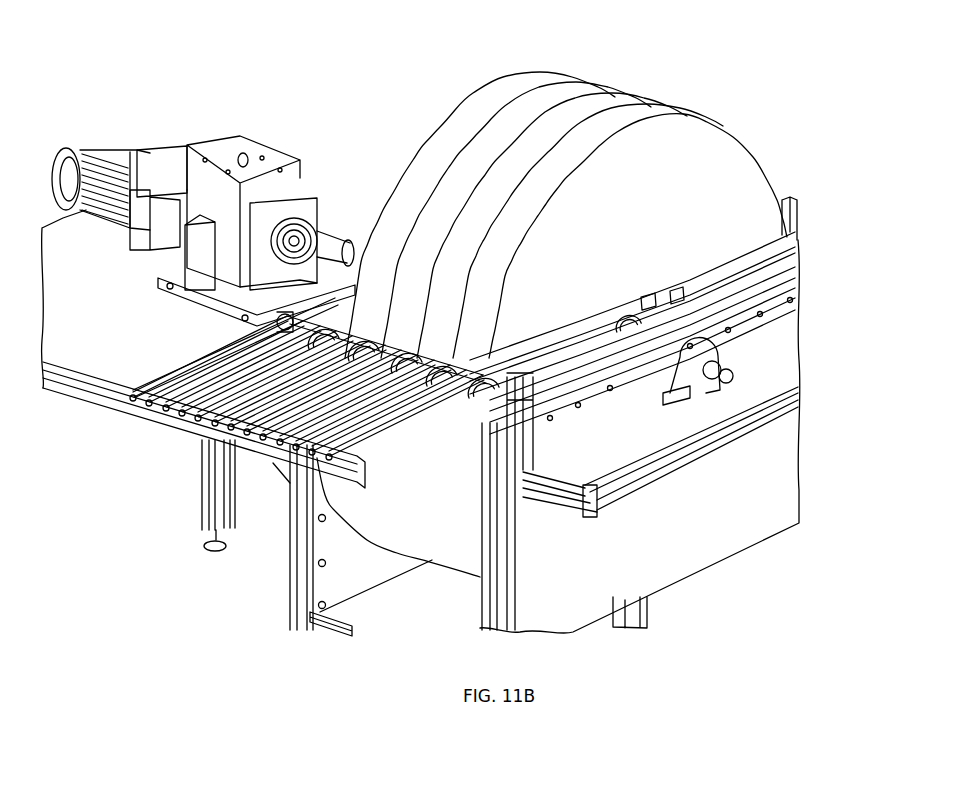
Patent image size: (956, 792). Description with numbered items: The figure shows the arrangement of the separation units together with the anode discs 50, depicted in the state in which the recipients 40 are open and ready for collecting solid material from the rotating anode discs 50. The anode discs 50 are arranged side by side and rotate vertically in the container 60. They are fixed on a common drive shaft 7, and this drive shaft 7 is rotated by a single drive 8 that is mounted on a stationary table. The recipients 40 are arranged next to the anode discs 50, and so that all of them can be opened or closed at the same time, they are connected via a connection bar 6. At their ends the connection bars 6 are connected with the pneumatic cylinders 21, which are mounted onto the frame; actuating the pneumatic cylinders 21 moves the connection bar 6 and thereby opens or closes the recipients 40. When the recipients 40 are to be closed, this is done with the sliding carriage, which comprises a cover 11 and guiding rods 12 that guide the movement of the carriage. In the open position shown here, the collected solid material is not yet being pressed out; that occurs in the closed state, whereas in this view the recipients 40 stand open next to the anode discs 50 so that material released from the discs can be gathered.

The connection bar 6 is at (140, 395).
The drive shaft 7 is at (303, 237).
The drive 8 is at (118, 160).
The cover 11 is at (367, 447).
The guiding rods 12 is at (397, 430).
The pneumatic cylinders 21 is at (590, 350).
The recipients 40 is at (557, 353).
The anode discs 50 is at (708, 132).
The container 60 is at (468, 553).